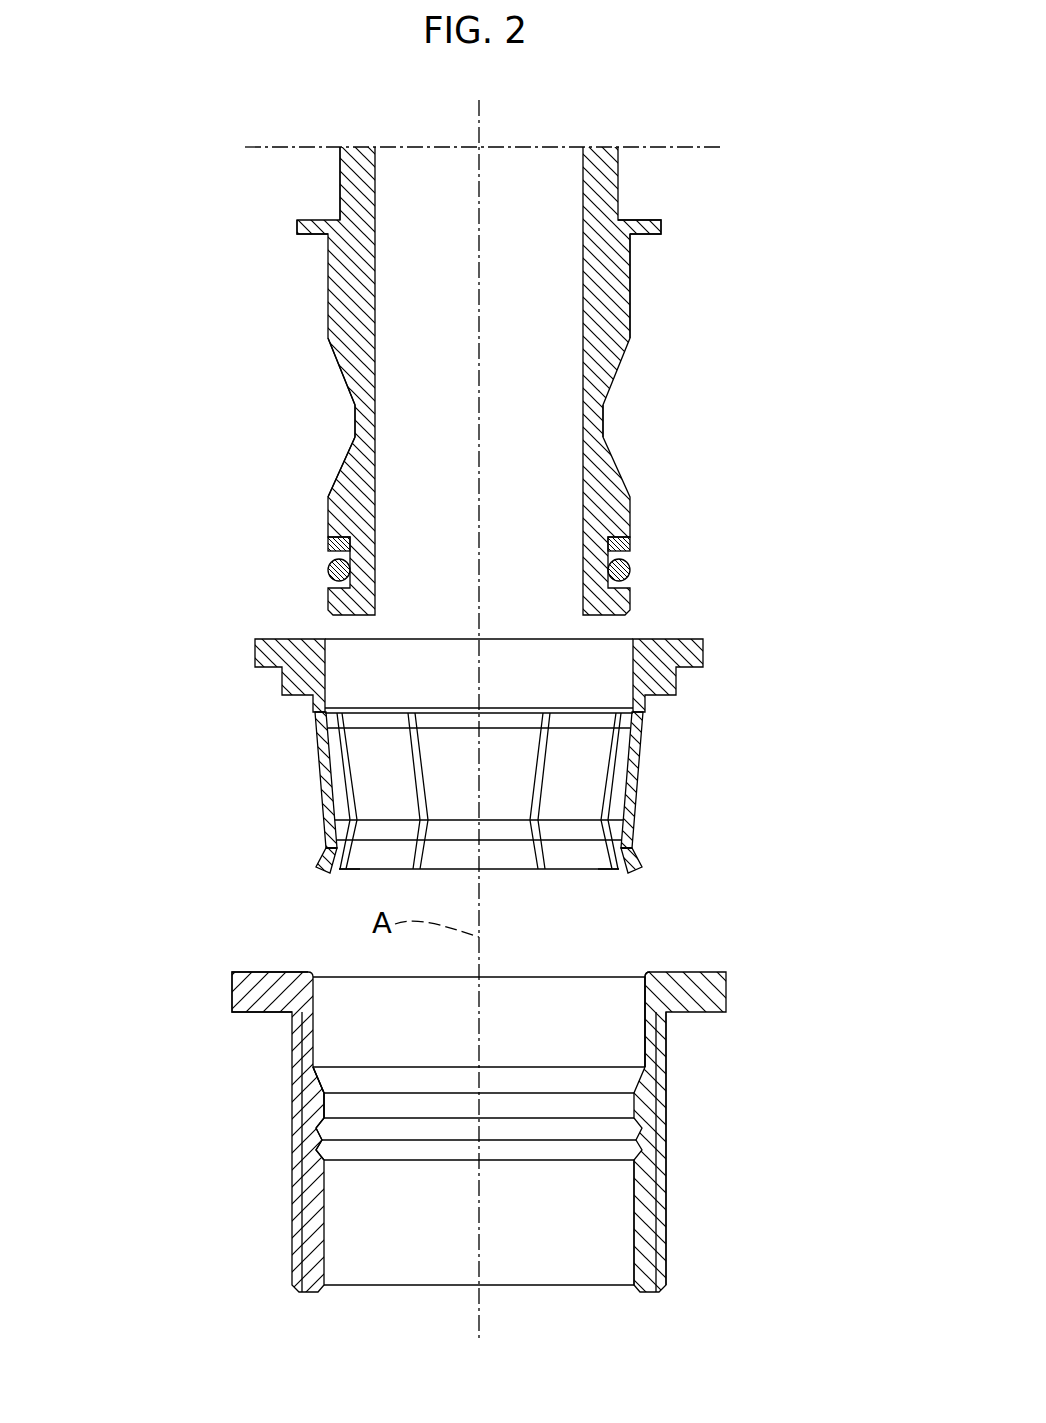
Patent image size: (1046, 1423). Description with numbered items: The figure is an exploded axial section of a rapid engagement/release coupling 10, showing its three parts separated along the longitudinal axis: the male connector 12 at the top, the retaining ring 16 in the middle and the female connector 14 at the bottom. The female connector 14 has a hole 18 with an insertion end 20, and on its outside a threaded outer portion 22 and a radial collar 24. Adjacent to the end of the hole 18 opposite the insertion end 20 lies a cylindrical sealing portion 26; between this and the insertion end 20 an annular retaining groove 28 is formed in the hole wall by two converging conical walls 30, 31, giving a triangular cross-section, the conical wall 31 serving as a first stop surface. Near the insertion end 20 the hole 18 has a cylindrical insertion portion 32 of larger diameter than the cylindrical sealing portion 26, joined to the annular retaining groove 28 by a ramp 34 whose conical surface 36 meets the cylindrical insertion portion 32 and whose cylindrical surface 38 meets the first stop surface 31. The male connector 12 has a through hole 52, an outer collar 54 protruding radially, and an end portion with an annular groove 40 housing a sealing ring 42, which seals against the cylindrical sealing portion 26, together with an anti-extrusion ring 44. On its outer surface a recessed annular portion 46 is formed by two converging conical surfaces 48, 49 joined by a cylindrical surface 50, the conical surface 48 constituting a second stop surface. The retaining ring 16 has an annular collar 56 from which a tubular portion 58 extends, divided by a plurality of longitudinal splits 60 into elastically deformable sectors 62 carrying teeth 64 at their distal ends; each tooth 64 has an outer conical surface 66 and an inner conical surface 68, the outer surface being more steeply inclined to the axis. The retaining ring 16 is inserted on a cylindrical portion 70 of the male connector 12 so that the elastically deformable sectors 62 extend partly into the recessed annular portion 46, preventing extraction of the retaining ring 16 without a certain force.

The rapid engagement/release coupling 10 is at (158, 257).
The male connector 12 is at (766, 318).
The female connector 14 is at (734, 1101).
The retaining ring 16 is at (206, 700).
The hole 18 is at (642, 1003).
The insertion end 20 is at (330, 972).
The threaded outer portion 22 is at (666, 1228).
The radial collar 24 is at (232, 995).
The cylindrical sealing portion 26 is at (633, 1237).
The annular retaining groove 28 is at (320, 1142).
The conical wall 30 is at (321, 1146).
The first stop surface 31 is at (322, 1130).
The cylindrical insertion portion 32 is at (644, 1020).
The ramp 34 is at (334, 1101).
The conical surface 36 is at (330, 1068).
The cylindrical surface 38 is at (333, 1106).
The annular groove 40 is at (327, 551).
The sealing ring 42 is at (631, 570).
The anti-extrusion ring 44 is at (631, 546).
The recessed annular portion 46 is at (608, 419).
The second stop surface 48 is at (342, 492).
The conical surface 49 is at (339, 366).
The cylindrical surface 50 is at (355, 427).
The through hole 52 is at (377, 278).
The outer collar 54 is at (661, 227).
The annular collar 56 is at (703, 647).
The tubular portion 58 is at (652, 749).
The longitudinal splits 60 is at (415, 763).
The elastically deformable sectors 62 is at (380, 782).
The teeth 64 is at (309, 856).
The outer conical surface 66 is at (329, 846).
The inner conical surface 68 is at (336, 870).
The cylindrical portion 70 is at (631, 297).